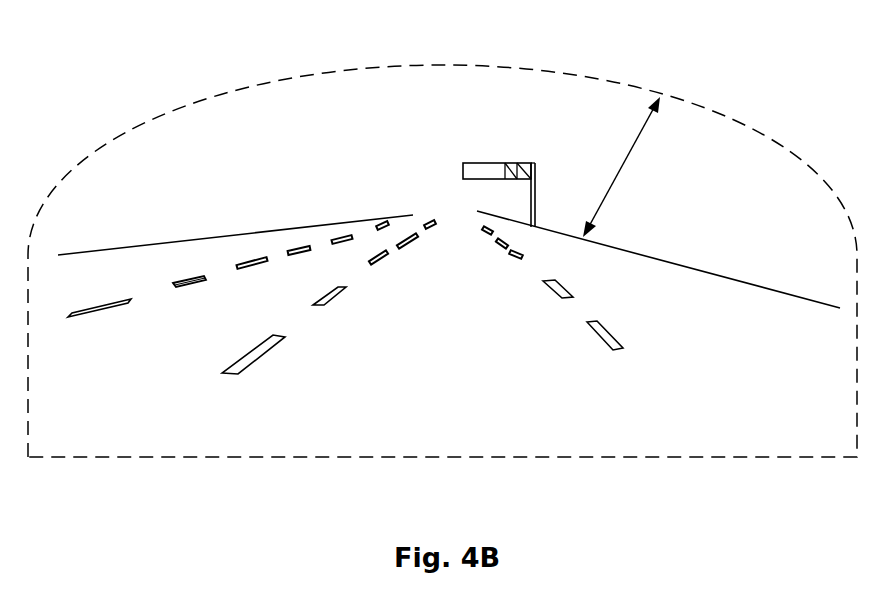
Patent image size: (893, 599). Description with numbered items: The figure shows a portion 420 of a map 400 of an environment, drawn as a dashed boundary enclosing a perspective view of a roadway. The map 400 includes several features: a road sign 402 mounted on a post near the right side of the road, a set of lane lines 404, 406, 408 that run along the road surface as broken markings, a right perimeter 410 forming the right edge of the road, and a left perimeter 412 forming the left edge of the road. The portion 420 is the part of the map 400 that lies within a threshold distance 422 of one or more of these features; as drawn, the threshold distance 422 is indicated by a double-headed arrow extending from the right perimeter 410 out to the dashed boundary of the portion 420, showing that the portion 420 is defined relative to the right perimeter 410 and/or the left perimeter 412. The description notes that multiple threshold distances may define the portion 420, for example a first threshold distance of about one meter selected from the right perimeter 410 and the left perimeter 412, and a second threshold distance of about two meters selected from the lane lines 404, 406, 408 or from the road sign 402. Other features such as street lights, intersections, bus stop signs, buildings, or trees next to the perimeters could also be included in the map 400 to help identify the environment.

The map 400 is at (104, 72).
The road sign 402 is at (497, 162).
The lane line 404 is at (597, 332).
The lane line 406 is at (262, 353).
The lane line 408 is at (193, 282).
The right perimeter 410 is at (773, 290).
The left perimeter 412 is at (168, 242).
The portion 420 is at (172, 115).
The threshold distance 422 is at (622, 170).